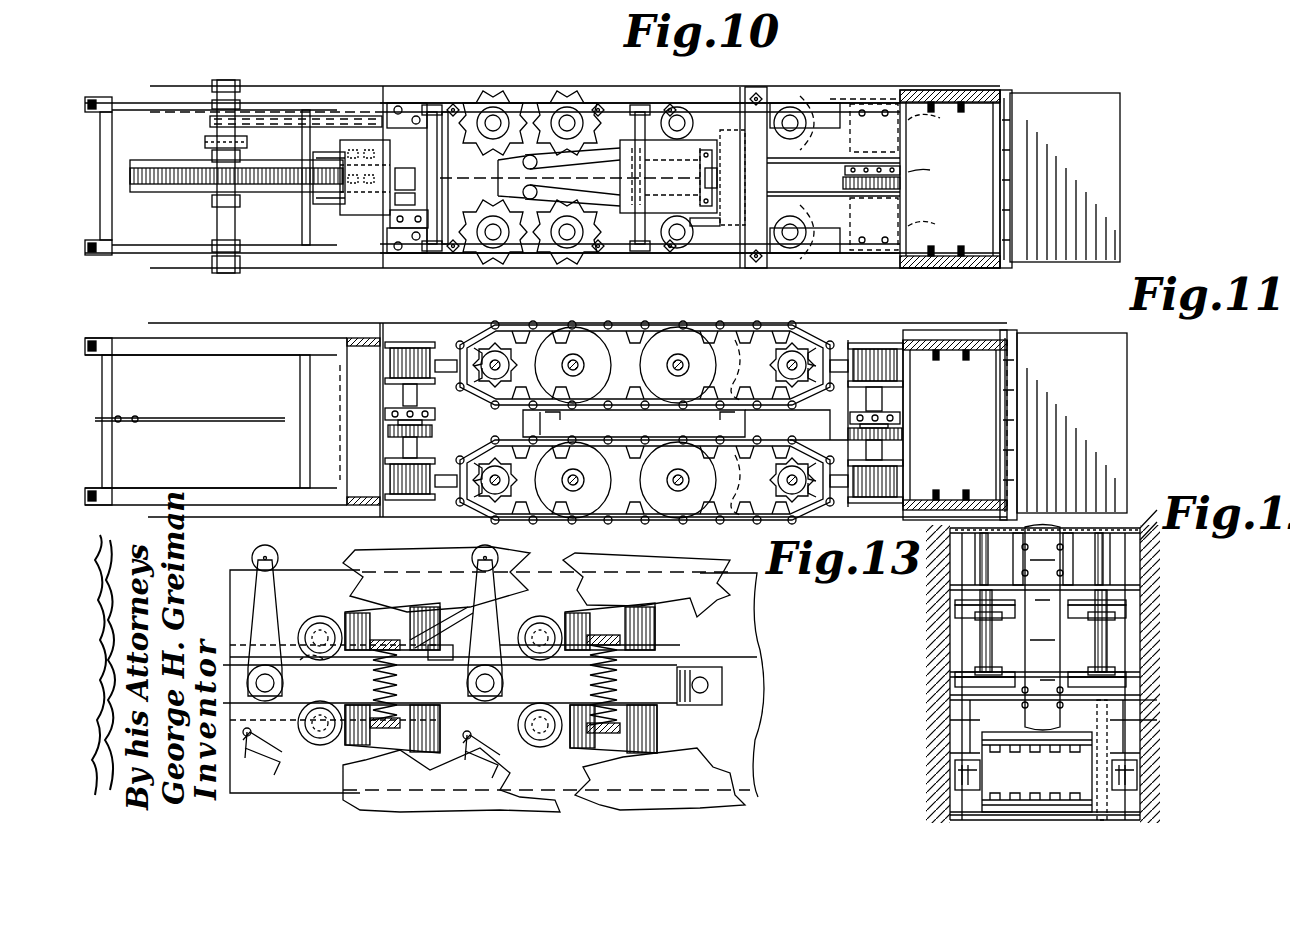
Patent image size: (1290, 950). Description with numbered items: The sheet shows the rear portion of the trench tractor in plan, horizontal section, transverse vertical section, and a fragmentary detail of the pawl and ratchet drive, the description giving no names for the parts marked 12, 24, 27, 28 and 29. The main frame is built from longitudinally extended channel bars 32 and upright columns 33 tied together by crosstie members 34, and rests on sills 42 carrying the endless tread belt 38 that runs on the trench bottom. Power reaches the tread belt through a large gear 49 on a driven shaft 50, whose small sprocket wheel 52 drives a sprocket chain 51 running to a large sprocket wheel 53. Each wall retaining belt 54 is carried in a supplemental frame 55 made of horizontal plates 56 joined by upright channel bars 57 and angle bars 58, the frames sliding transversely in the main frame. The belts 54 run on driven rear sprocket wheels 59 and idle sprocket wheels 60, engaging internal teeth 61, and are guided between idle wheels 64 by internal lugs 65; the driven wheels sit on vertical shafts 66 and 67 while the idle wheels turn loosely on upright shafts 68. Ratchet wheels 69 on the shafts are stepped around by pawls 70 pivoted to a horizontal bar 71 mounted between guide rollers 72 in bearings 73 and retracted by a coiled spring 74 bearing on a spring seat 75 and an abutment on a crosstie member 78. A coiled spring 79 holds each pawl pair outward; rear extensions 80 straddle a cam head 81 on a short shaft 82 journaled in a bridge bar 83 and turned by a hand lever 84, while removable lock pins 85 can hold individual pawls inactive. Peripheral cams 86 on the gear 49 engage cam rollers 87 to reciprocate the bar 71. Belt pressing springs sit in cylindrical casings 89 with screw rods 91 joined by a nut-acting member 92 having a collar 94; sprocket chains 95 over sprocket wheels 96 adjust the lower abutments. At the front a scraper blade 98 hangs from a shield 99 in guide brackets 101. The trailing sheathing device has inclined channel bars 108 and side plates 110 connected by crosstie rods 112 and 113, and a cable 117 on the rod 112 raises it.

In FIG. 11, the left frame post 12 is at (112, 380).
In FIG. 11, the track assembly 24 is at (552, 518).
In FIG. 10, the saw gear 27 is at (493, 107).
In FIG. 10, the sprocket gear 28 is at (792, 118).
In FIG. 10, the saw blade 29 is at (536, 100).
In FIG. 10, the longitudinally extended channel bars 32 is at (352, 92).
In FIG. 11, the longitudinally extended channel bars 32 is at (312, 310).
In FIG. 12, the longitudinally extended channel bars 32 is at (950, 560).
In FIG. 10, the upright channel bars or columns 33 is at (372, 258).
In FIG. 11, the upright channel bars or columns 33 is at (350, 338).
In FIG. 11, the crosstie members 34 is at (347, 438).
In FIG. 12, the endless tread belt 38 is at (1037, 772).
In FIG. 12, the sills 42 is at (950, 775).
In FIG. 10, the large gear 49 is at (180, 190).
In FIG. 10, the driven shaft 50 is at (217, 225).
In FIG. 10, the sprocket chain 51 is at (286, 112).
In FIG. 12, the sprocket chain 51 is at (1140, 733).
In FIG. 10, the small sprocket wheel 52 is at (208, 140).
In FIG. 12, the large sprocket wheel 53 is at (1120, 812).
In FIG. 11, the belt 54 is at (662, 325).
In FIG. 12, the belt 54 is at (958, 636).
In FIG. 10, the supplemental frame 55 is at (848, 160).
In FIG. 11, the supplemental frame 55 is at (835, 405).
In FIG. 12, the supplemental frame 55 is at (1148, 520).
In FIG. 10, the horizontal plates 56 is at (405, 103).
In FIG. 11, the horizontal plates 56 is at (870, 320).
In FIG. 12, the horizontal plates 56 is at (1046, 557).
In FIG. 10, the upright channel bars 57 is at (880, 100).
In FIG. 11, the upright channel bars 57 is at (397, 342).
In FIG. 11, the upright angle bars 58 is at (545, 418).
In FIG. 12, the upright angle bars 58 is at (1042, 628).
In FIG. 11, the driven rear sprocket wheels 59 is at (485, 345).
In FIG. 11, the idle sprocket wheels 60 is at (795, 350).
In FIG. 11, the internal teeth 61 is at (736, 427).
In FIG. 11, the idle wheels 64 is at (575, 360).
In FIG. 12, the idle wheels 64 is at (958, 610).
In FIG. 12, the internal lugs 65 is at (950, 595).
In FIG. 10, the vertical shafts 66 is at (568, 120).
In FIG. 11, the vertical shafts 66 is at (573, 340).
In FIG. 11, the vertical shafts 67 is at (497, 360).
In FIG. 11, the upright shafts 68 is at (795, 362).
In FIG. 13, the ratchet wheels 69 is at (493, 679).
In FIG. 10, the pawls 70 is at (559, 177).
In FIG. 13, the pawls 70 is at (355, 618).
In FIG. 10, the horizontal bar 71 is at (668, 176).
In FIG. 13, the horizontal bar 71 is at (760, 632).
In FIG. 10, the guide rollers 72 is at (703, 190).
In FIG. 10, the bearings 73 is at (436, 105).
In FIG. 10, the coiled spring 74 is at (712, 160).
In FIG. 10, the spring seat 75 is at (706, 226).
In FIG. 10, the crosstie member 78 is at (745, 95).
In FIG. 13, the coiled spring 79 is at (398, 662).
In FIG. 13, the rear extensions 80 is at (300, 635).
In FIG. 10, the cam head 81 is at (548, 250).
In FIG. 13, the cam head 81 is at (530, 685).
In FIG. 13, the short shaft 82 is at (470, 688).
In FIG. 13, the bridge bar 83 is at (670, 680).
In FIG. 13, the hand lever 84 is at (478, 598).
In FIG. 13, the removable lock pin 85 is at (245, 610).
In FIG. 10, the peripheral cams 86 is at (258, 168).
In FIG. 10, the cam rollers 87 is at (350, 160).
In FIG. 10, the cylindrical casings 89 is at (934, 173).
In FIG. 11, the cylindrical casings 89 is at (392, 368).
In FIG. 10, the screw rods 91 is at (392, 228).
In FIG. 11, the screw rods 91 is at (403, 393).
In FIG. 10, the nut-acting member 92 is at (929, 176).
In FIG. 10, the collar 94 is at (395, 180).
In FIG. 11, the collar 94 is at (385, 414).
In FIG. 10, the sprocket chains 95 is at (395, 205).
In FIG. 11, the sprocket chains 95 is at (398, 423).
In FIG. 11, the sprocket wheels 96 is at (388, 431).
In FIG. 10, the scraper blade 98 is at (1065, 177).
In FIG. 11, the scraper blade 98 is at (1072, 423).
In FIG. 10, the front plate or shield 99 is at (1012, 110).
In FIG. 11, the front plate or shield 99 is at (1017, 358).
In FIG. 10, the guide brackets 101 is at (1012, 95).
In FIG. 11, the guide brackets 101 is at (1012, 340).
In FIG. 10, the inclined channel bar 108 is at (128, 97).
In FIG. 11, the inclined channel bar 108 is at (128, 340).
In FIG. 10, the side plate 110 is at (140, 255).
In FIG. 11, the side plate 110 is at (128, 506).
In FIG. 10, the upper crosstie rod 112 is at (112, 150).
In FIG. 10, the lower crosstie rod 113 is at (316, 115).
In FIG. 11, the lower crosstie rod 113 is at (300, 380).
In FIG. 11, the cable 117 is at (218, 400).